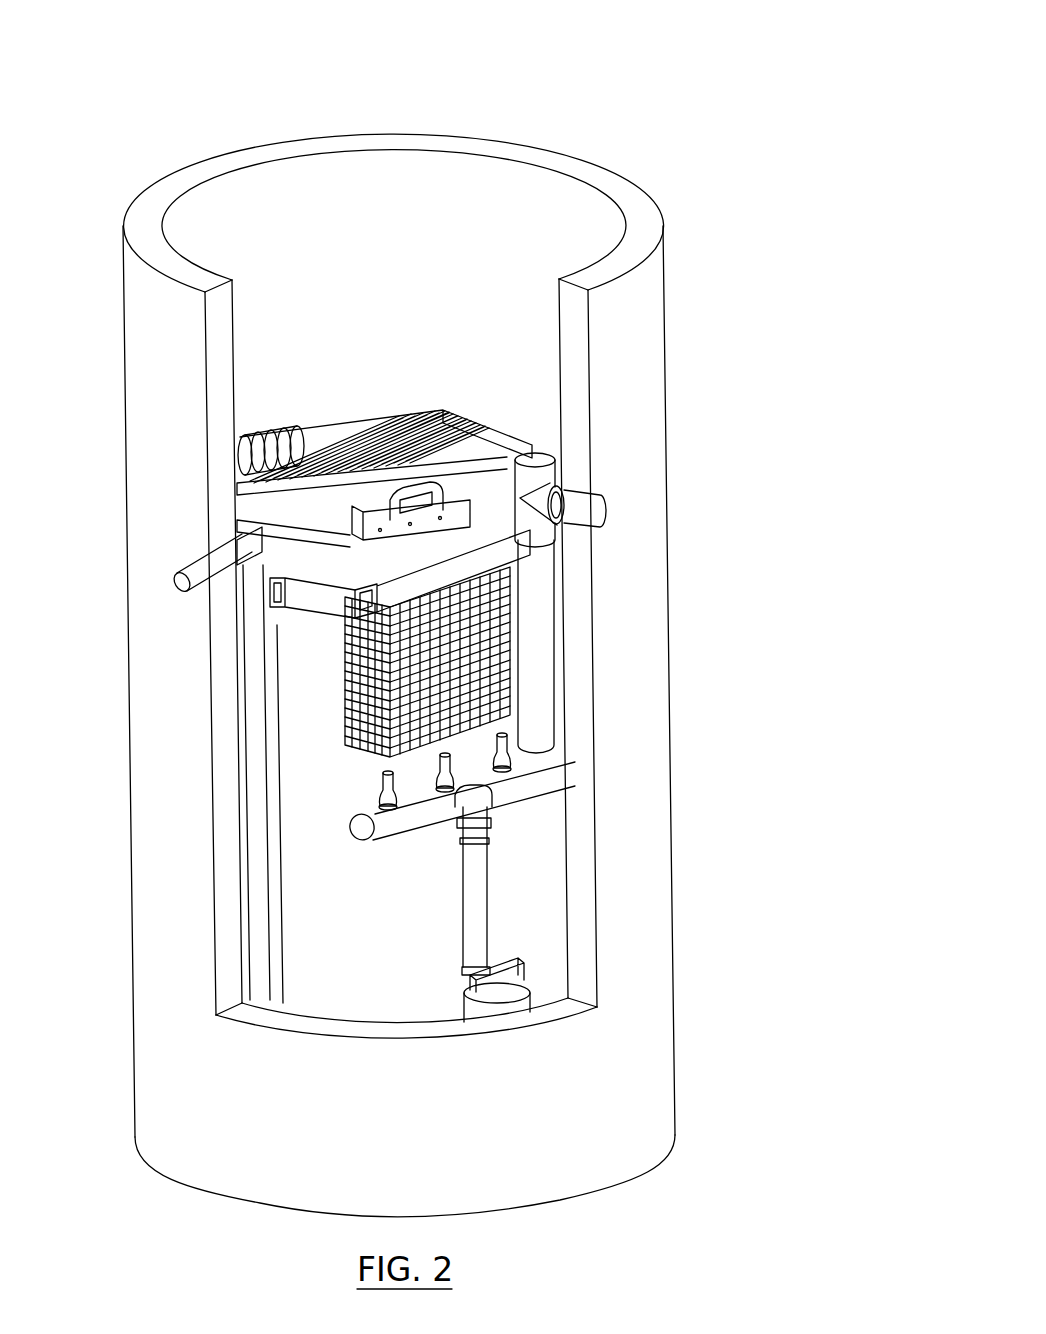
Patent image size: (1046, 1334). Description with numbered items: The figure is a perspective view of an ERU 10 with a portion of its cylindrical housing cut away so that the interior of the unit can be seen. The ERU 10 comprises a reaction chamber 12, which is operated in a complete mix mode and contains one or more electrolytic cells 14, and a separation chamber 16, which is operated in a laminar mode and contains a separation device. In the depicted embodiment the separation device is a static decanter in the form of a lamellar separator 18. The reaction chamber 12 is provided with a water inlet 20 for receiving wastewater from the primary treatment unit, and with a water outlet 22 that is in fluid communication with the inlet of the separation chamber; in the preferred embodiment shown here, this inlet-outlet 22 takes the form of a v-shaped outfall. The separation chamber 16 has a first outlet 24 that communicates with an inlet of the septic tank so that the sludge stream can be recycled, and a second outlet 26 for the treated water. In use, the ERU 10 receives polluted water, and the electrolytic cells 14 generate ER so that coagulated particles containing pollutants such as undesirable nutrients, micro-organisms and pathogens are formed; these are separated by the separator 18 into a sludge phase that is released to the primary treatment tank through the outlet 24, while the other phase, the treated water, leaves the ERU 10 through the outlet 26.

The ERU 10 is at (630, 63).
The reaction chamber 12 is at (376, 925).
The electrolytic cells 14 is at (375, 575).
The separation chamber 16 is at (323, 286).
The lamellar separator 18 is at (490, 414).
The water inlet 20 is at (593, 512).
The water outlet 22 is at (238, 526).
The first outlet 24 is at (180, 590).
The second outlet 26 is at (237, 462).